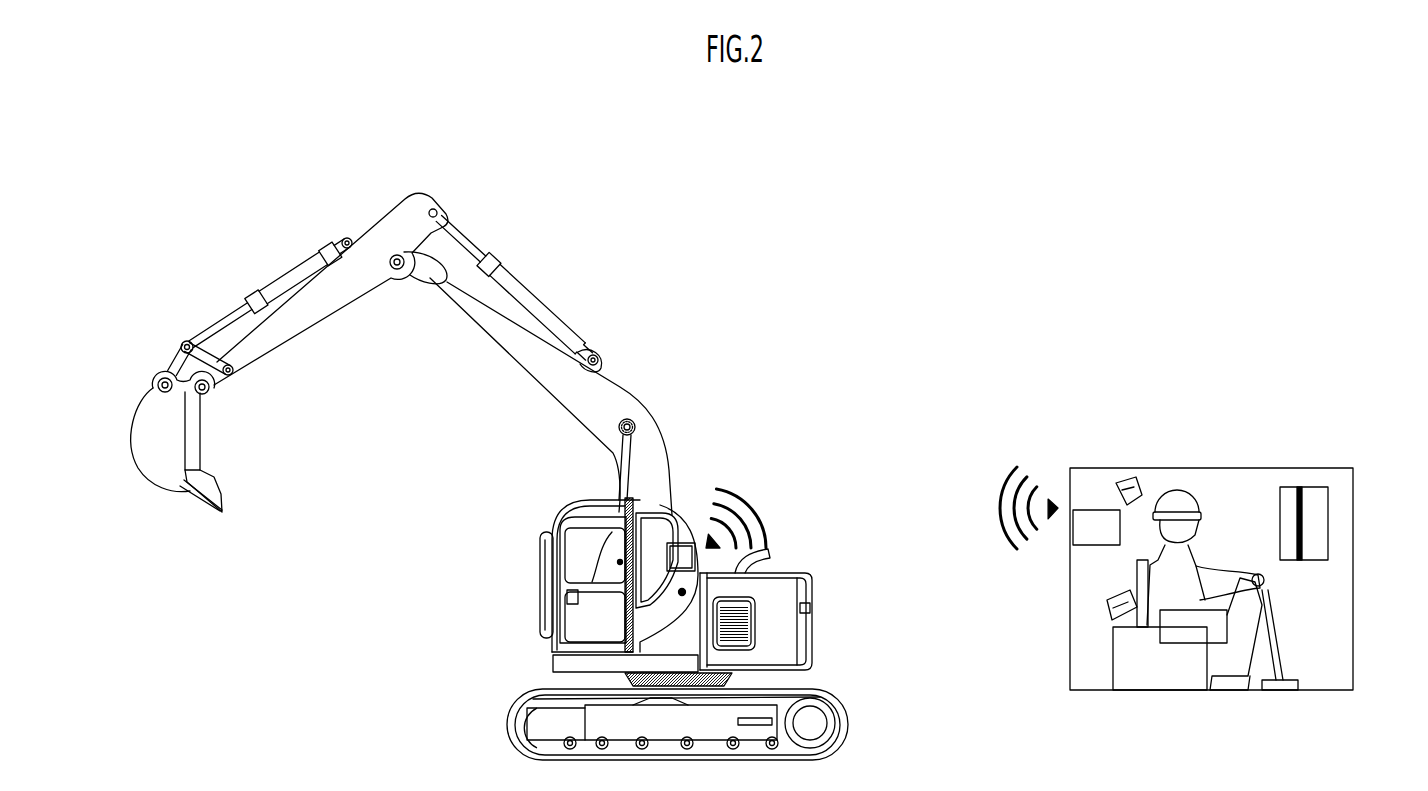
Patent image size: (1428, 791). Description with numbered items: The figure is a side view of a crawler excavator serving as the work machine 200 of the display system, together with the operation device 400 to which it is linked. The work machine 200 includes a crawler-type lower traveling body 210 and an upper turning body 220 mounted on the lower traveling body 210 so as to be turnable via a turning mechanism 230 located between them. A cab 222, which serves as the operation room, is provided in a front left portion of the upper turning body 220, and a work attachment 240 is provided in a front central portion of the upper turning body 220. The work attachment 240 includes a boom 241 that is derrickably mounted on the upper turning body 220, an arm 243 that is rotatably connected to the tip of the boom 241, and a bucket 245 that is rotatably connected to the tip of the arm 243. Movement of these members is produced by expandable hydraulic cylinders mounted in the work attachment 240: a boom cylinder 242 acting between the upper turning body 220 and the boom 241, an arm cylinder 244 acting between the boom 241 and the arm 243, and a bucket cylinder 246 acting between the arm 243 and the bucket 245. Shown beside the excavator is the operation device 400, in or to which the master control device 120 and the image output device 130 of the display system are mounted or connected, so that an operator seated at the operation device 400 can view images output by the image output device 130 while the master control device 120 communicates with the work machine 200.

The work machine 200 is at (786, 337).
The lower traveling body 210 is at (842, 706).
The upper turning body 220 is at (831, 611).
The cab 222 is at (716, 458).
The turning mechanism 230 is at (745, 690).
The work attachment 240 is at (470, 198).
The boom 241 is at (660, 461).
The boom cylinder 242 is at (617, 483).
The arm 243 is at (313, 321).
The arm cylinder 244 is at (532, 296).
The bucket 245 is at (138, 438).
The bucket cylinder 246 is at (276, 282).
The master control device 120 is at (687, 540).
The image output device 130 is at (1328, 516).
The operation device 400 is at (1268, 484).